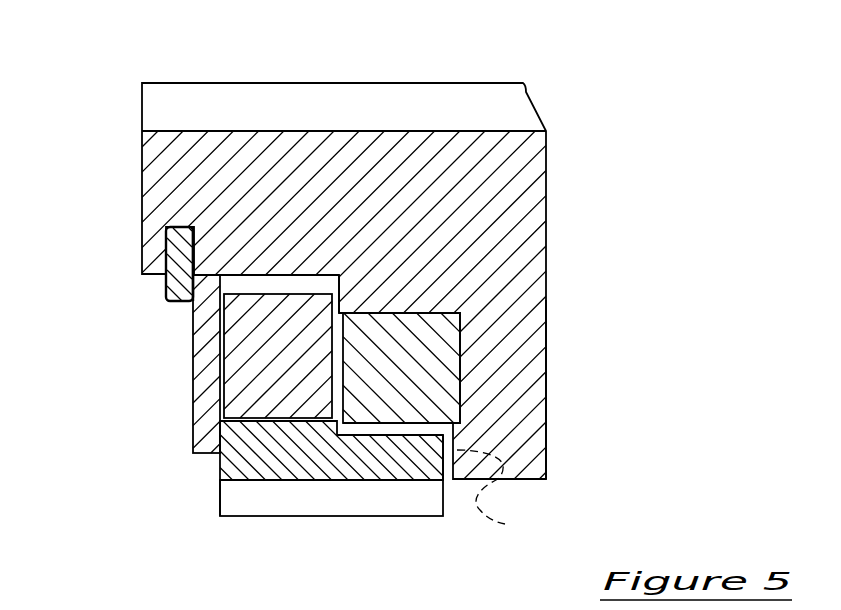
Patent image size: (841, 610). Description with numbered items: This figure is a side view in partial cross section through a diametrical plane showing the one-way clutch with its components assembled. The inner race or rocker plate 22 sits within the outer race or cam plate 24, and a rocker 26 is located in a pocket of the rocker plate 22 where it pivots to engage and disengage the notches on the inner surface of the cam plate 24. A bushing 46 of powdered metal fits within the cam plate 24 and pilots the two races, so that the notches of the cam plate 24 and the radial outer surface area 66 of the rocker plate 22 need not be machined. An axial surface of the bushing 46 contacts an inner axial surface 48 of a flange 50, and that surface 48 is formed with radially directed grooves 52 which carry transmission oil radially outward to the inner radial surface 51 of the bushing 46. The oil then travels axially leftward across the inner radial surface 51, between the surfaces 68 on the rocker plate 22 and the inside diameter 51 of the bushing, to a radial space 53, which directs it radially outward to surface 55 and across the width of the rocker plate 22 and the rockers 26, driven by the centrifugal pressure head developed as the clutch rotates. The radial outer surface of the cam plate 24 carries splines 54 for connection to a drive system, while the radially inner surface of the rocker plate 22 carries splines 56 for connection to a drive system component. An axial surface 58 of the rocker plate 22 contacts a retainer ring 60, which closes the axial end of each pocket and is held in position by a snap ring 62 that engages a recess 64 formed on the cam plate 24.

The rocker plate 22 is at (243, 457).
The cam plate 24 is at (162, 176).
The rocker 26 is at (230, 407).
The bushing 46 is at (440, 338).
The inner axial surface 48 is at (458, 405).
The flange 50 is at (533, 378).
The inner radial surface 51 is at (418, 432).
The radially directed grooves 52 is at (500, 496).
The radial space 53 is at (332, 373).
The splines 54 is at (466, 98).
The surface 55 is at (258, 282).
The splines 56 is at (373, 502).
The axial surface 58 is at (220, 498).
The retainer ring 60 is at (202, 373).
The snap ring 62 is at (173, 303).
The recess 64 is at (166, 252).
The radial outer surface area 66 is at (285, 405).
The surfaces 68 is at (358, 418).